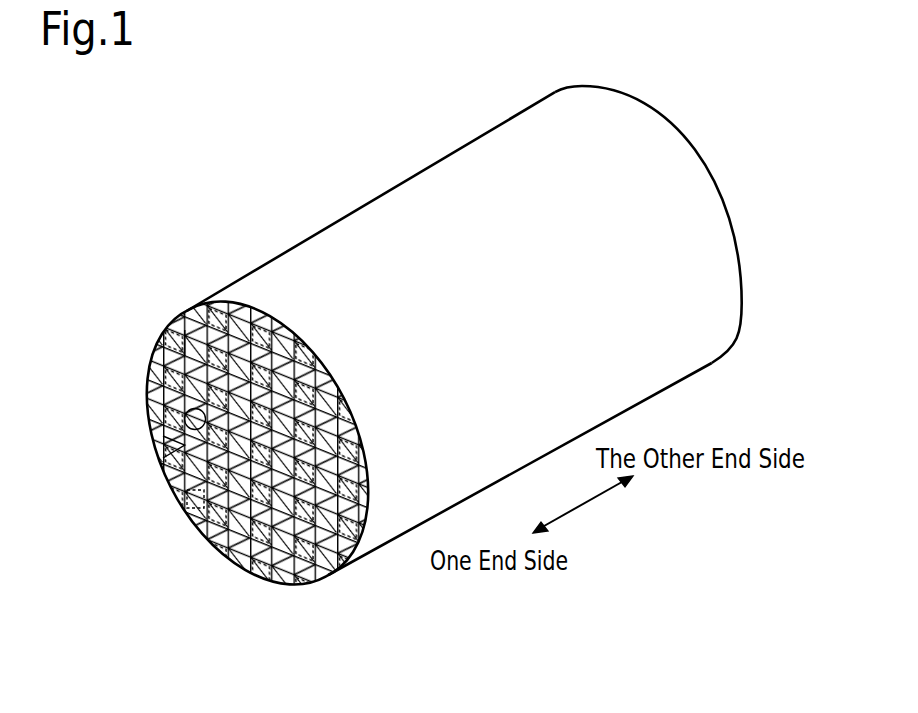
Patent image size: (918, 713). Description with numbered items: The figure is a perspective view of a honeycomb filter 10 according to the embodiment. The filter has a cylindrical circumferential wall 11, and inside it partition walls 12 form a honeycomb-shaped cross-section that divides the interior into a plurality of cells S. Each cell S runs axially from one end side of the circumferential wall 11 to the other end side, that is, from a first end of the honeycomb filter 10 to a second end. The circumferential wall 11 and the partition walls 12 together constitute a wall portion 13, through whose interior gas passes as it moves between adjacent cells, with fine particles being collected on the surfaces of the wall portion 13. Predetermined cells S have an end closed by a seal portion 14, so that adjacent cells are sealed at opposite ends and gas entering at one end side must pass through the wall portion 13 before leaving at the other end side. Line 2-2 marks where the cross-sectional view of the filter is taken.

The honeycomb filter 10 is at (400, 153).
The circumferential wall 11 is at (188, 500).
The partition walls 12 is at (170, 443).
The wall portion 13 is at (103, 440).
The seal portion 14 is at (176, 344).
The cell S is at (186, 416).
The line 2- 2 is at (222, 540).